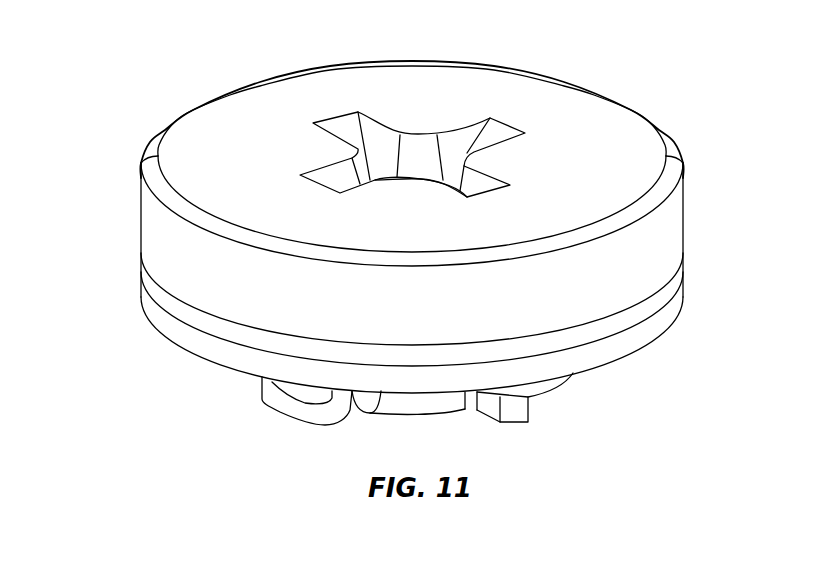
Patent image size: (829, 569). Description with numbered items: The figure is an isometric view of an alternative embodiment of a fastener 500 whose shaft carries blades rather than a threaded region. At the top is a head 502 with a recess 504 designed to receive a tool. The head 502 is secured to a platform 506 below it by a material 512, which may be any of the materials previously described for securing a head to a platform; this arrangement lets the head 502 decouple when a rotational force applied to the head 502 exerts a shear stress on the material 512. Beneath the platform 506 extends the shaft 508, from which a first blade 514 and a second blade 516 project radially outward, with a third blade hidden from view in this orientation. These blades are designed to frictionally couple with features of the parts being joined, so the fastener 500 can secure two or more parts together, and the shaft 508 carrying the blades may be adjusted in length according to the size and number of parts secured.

The fastener 500 is at (122, 96).
The head 502 is at (562, 100).
The recess 504 is at (315, 96).
The platform 506 is at (175, 323).
The shaft 508 is at (418, 405).
The material 512 is at (146, 273).
The first blade 514 is at (303, 407).
The second blade 516 is at (553, 398).